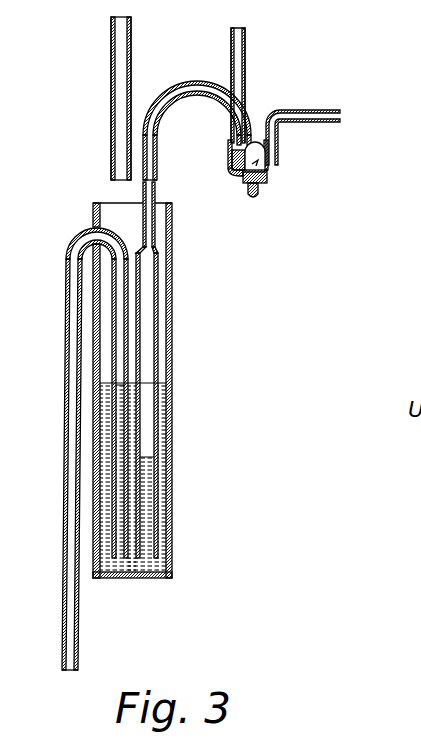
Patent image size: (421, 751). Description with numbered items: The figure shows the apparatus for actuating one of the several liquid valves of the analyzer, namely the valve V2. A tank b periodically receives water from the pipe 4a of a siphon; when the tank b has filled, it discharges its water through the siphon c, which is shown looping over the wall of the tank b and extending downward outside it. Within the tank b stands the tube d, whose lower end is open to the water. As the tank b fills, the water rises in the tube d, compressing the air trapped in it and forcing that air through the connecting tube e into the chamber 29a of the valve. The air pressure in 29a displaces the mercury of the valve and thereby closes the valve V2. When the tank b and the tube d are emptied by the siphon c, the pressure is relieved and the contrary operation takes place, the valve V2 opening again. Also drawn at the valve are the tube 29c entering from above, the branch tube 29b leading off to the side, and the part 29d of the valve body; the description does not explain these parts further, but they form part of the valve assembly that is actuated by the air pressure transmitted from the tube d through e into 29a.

The pipe 4a is at (110, 110).
The tube 29c is at (230, 56).
The tube e is at (158, 150).
The branch tube 29b is at (276, 101).
The valve chamber 29d is at (272, 142).
The valve chamber 29a is at (272, 164).
The liquid valve V2 is at (272, 177).
The tank b is at (176, 262).
The siphon c is at (65, 296).
The tube d is at (159, 340).